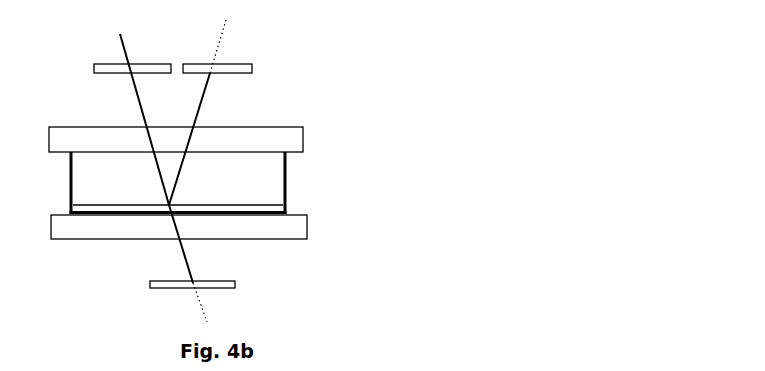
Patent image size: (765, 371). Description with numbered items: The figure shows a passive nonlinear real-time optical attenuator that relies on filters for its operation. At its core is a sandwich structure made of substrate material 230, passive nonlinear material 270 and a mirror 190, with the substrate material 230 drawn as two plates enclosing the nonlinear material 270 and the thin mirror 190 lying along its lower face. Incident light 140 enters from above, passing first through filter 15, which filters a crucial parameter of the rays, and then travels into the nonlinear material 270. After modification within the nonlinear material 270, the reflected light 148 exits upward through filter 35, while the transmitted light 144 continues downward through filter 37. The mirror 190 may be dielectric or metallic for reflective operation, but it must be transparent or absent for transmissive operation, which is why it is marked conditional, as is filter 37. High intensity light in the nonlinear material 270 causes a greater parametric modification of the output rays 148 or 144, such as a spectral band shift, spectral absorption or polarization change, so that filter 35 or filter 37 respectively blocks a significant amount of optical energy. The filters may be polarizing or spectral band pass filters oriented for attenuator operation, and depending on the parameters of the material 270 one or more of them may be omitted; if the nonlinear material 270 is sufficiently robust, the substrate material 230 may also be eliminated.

The filter 15 is at (120, 70).
The filter 35 is at (234, 70).
The filter 37 is at (251, 285).
The incident light 140 is at (144, 119).
The transmitted light 144 is at (197, 263).
The reflected light 148 is at (206, 112).
The mirror 190 is at (275, 208).
The substrate material 230 is at (178, 183).
The passive nonlinear material 270 is at (178, 183).